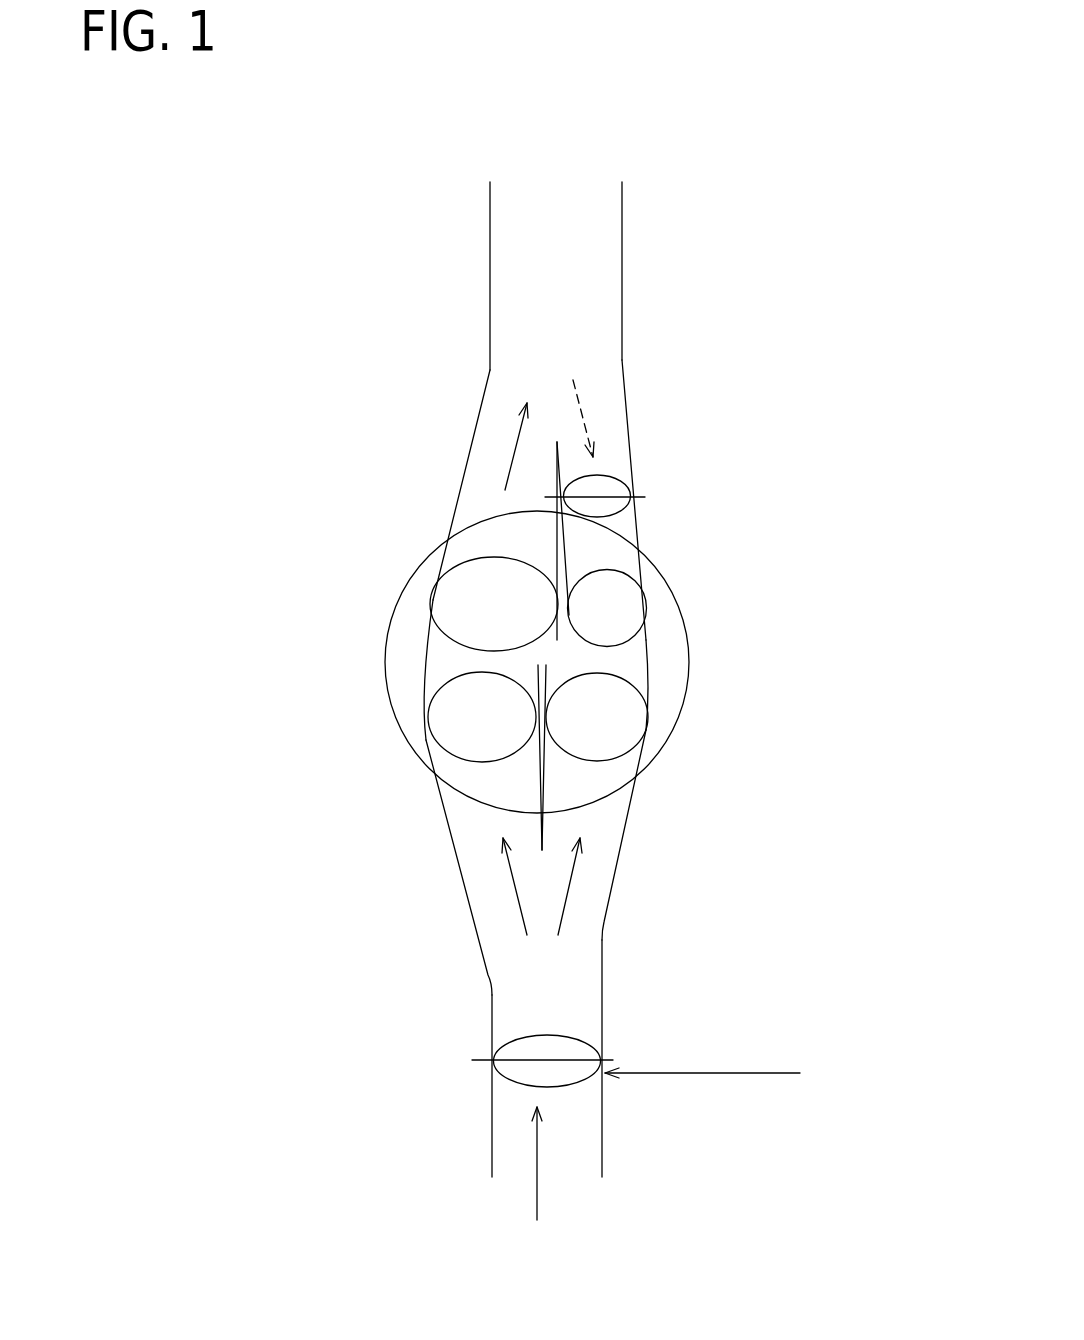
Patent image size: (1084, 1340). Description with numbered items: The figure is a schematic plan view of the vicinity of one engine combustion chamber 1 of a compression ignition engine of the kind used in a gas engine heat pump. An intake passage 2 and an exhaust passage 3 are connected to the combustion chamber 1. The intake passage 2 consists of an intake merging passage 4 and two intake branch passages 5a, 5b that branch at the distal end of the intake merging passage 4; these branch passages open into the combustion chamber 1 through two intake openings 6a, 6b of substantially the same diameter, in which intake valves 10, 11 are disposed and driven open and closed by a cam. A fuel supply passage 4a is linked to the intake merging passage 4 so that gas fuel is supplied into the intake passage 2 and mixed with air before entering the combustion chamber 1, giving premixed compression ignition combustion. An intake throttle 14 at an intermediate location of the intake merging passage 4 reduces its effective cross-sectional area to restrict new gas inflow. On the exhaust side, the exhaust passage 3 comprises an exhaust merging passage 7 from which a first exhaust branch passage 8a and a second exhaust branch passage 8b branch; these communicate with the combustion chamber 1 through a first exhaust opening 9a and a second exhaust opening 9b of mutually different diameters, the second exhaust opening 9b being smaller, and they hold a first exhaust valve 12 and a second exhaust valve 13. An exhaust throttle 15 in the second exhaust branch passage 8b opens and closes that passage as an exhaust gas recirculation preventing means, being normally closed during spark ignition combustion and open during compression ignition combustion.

The engine combustion chamber 1 is at (377, 700).
The intake passage 2 is at (388, 1010).
The exhaust passage 3 is at (403, 353).
The intake merging passage 4 is at (492, 1022).
The fuel supply passage 4a is at (753, 1075).
The intake branch passage 5a is at (457, 860).
The intake branch passage 5b is at (620, 862).
The intake opening 6a is at (432, 722).
The intake opening 6b is at (647, 727).
The exhaust merging passage 7 is at (623, 257).
The first exhaust branch passage 8a is at (462, 466).
The second exhaust branch passage 8b is at (640, 533).
The first exhaust opening 9a is at (472, 613).
The second exhaust opening 9b is at (647, 615).
The intake valve 10 is at (463, 705).
The intake valve 11 is at (612, 718).
The first exhaust valve 12 is at (448, 627).
The second exhaust valve 13 is at (620, 627).
The intake throttle 14 is at (560, 1087).
The exhaust throttle 15 is at (610, 477).